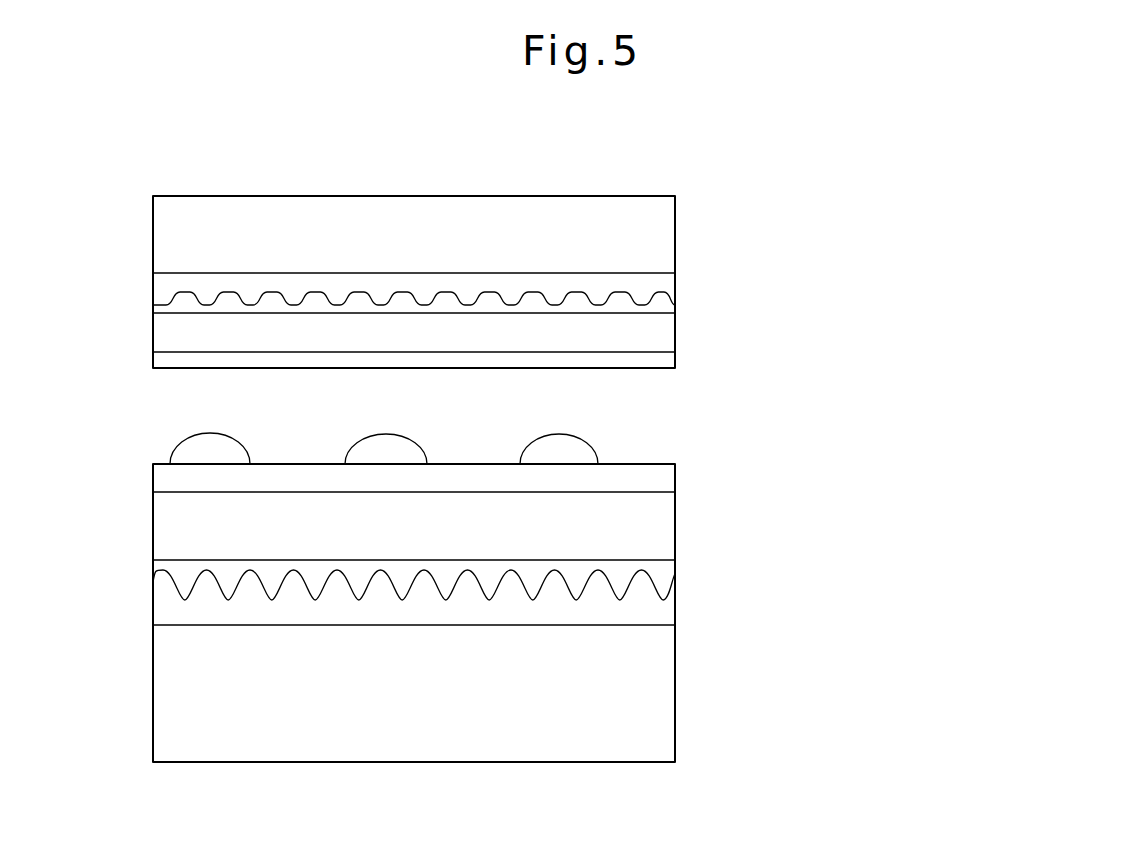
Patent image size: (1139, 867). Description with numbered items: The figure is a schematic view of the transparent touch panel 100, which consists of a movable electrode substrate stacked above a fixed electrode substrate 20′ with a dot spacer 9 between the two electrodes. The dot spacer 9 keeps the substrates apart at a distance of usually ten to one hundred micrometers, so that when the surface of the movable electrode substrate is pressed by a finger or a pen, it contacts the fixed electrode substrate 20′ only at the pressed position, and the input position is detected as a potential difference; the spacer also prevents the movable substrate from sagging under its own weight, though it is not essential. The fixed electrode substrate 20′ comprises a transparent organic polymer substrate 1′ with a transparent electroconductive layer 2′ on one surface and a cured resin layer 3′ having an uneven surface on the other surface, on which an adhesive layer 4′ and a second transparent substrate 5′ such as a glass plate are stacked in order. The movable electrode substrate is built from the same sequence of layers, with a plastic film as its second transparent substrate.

The transparent touch panel 100 is at (972, 160).
The fixed electrode substrate 20′ is at (837, 437).
The transparent electroconductive layer 2′ is at (625, 482).
The transparent organic polymer substrate 1′ is at (625, 540).
The cured resin layer 3′ is at (663, 570).
The adhesive layer 4′ is at (635, 617).
The second transparent substrate 5′ is at (635, 737).
The dot spacer 9 is at (220, 457).